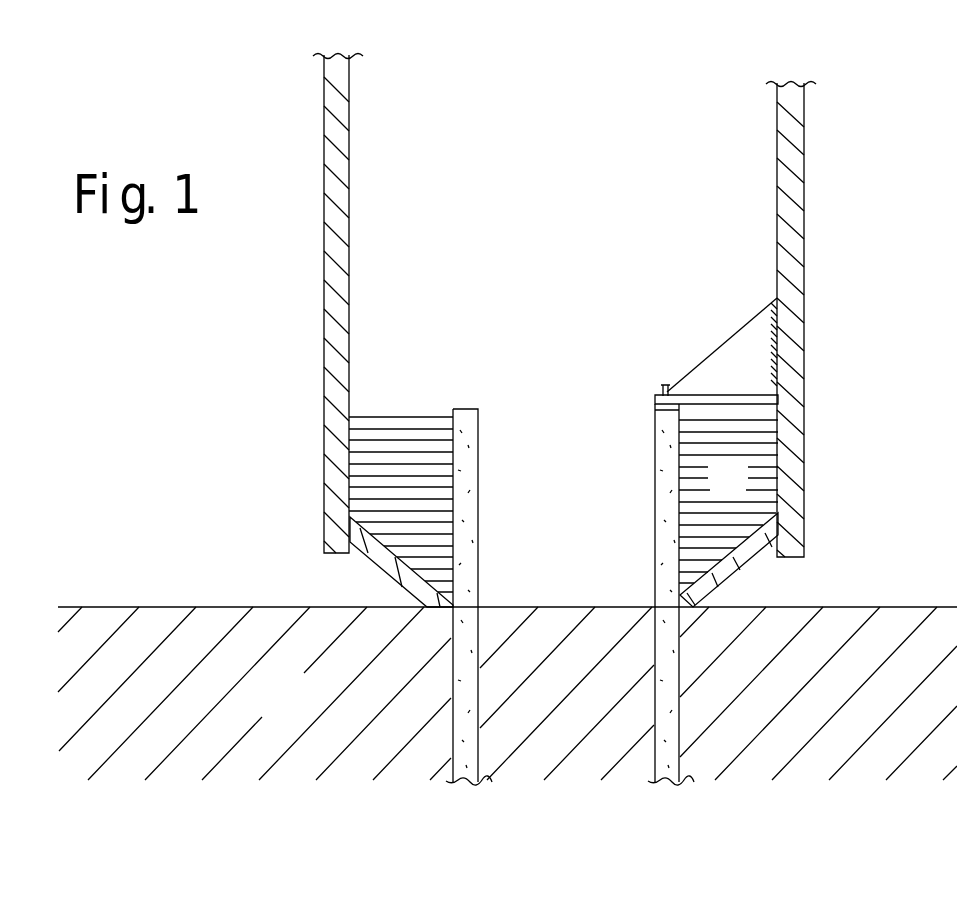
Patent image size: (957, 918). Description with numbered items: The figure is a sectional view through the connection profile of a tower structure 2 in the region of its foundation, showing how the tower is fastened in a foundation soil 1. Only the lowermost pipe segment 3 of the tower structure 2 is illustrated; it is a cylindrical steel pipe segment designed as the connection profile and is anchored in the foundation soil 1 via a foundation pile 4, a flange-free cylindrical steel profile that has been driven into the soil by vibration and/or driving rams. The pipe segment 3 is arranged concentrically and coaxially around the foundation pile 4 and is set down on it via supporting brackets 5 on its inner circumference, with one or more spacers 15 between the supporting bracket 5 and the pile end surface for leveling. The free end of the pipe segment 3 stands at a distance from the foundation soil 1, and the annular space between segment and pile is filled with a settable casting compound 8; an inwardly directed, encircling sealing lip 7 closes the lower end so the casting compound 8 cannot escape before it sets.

The foundation soil 1 is at (295, 708).
The tower structure 2 is at (507, 280).
The pipe segment 3 is at (330, 292).
The foundation pile 4 is at (478, 450).
The supporting bracket 5 is at (760, 338).
The sealing lip 7 is at (763, 570).
The casting compound 8 is at (744, 488).
The spacer 15 is at (660, 388).